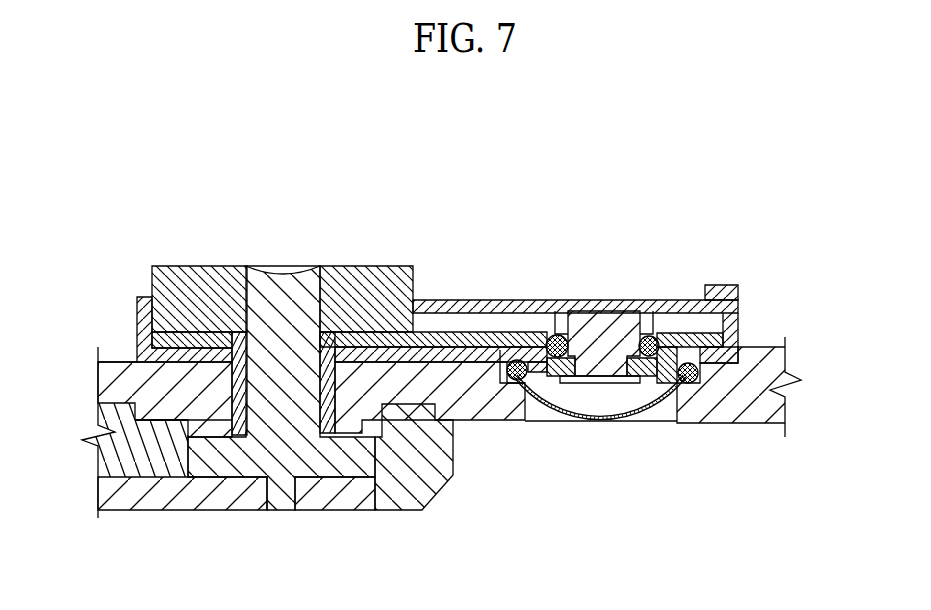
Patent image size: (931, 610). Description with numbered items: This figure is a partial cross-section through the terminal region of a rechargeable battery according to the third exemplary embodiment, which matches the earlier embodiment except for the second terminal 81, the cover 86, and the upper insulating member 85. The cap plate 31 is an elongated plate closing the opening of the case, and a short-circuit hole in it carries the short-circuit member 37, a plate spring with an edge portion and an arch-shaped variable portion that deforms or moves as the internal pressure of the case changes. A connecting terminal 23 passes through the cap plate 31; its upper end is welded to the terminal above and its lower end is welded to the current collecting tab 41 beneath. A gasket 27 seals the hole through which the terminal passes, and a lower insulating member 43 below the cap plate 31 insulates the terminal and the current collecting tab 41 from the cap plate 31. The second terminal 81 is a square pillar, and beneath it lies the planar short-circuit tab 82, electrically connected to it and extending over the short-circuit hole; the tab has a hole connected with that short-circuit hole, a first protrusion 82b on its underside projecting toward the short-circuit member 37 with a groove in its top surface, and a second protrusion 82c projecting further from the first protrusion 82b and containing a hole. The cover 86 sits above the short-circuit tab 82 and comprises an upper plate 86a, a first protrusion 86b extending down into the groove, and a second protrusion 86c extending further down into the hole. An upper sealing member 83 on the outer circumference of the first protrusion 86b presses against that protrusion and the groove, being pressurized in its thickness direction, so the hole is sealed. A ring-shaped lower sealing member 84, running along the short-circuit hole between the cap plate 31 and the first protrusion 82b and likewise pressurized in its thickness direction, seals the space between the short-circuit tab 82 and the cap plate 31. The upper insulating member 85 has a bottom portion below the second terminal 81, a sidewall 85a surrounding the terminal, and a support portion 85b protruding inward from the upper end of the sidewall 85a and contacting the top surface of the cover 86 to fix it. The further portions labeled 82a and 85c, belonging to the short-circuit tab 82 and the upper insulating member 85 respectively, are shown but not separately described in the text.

The connecting terminal 23 is at (278, 302).
The gasket 27 is at (237, 397).
The cap plate 31 is at (122, 382).
The short-circuit member 37 is at (565, 420).
The current collecting tab 41 is at (178, 494).
The lower insulating member 43 is at (130, 457).
The second terminal 81 is at (371, 289).
The short-circuit tab 82 is at (455, 328).
The plate lower layer 82a is at (498, 345).
The first protrusion 82b is at (692, 385).
The second protrusion 82c is at (650, 378).
The upper sealing member 83 is at (556, 334).
The lower sealing member 84 is at (513, 390).
The upper insulating member 85 is at (740, 307).
The sidewall 85a is at (738, 329).
The support portion 85b is at (740, 302).
The cover flange 85c is at (714, 358).
The cover 86 is at (673, 300).
The upper plate 86a is at (678, 298).
The first protrusion 86b is at (655, 311).
The second protrusion 86c is at (610, 384).